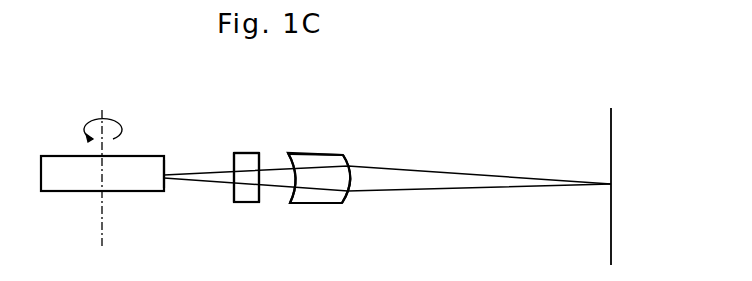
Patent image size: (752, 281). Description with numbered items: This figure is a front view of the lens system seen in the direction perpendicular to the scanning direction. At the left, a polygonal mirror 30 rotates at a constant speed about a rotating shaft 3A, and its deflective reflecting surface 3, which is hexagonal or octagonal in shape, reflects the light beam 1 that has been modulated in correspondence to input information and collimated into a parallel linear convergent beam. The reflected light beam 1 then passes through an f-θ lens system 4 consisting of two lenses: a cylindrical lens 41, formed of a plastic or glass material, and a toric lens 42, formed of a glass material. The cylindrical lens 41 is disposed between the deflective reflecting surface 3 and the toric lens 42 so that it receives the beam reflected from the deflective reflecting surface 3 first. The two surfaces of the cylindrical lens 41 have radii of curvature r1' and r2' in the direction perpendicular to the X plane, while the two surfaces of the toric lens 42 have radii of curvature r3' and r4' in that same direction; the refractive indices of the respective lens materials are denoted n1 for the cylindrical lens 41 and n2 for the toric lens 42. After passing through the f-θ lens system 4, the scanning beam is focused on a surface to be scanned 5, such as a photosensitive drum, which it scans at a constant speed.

The light beam 1 is at (453, 173).
The deflective reflecting surface 3 is at (170, 183).
The rotating shaft 3A is at (103, 117).
The polygonal mirror 30 is at (122, 187).
The f-θ lens system 4 is at (294, 183).
The cylindrical lens 41 is at (245, 203).
The toric lens 42 is at (335, 203).
The surface to be scanned 5 is at (611, 202).
The refractive index of the lens material n1 is at (250, 153).
The refractive index of the lens material n2 is at (323, 158).
The radius of curvature r1' is at (218, 195).
The radius of curvature r2' is at (269, 195).
The radius of curvature r3' is at (304, 195).
The radius of curvature r4' is at (359, 196).